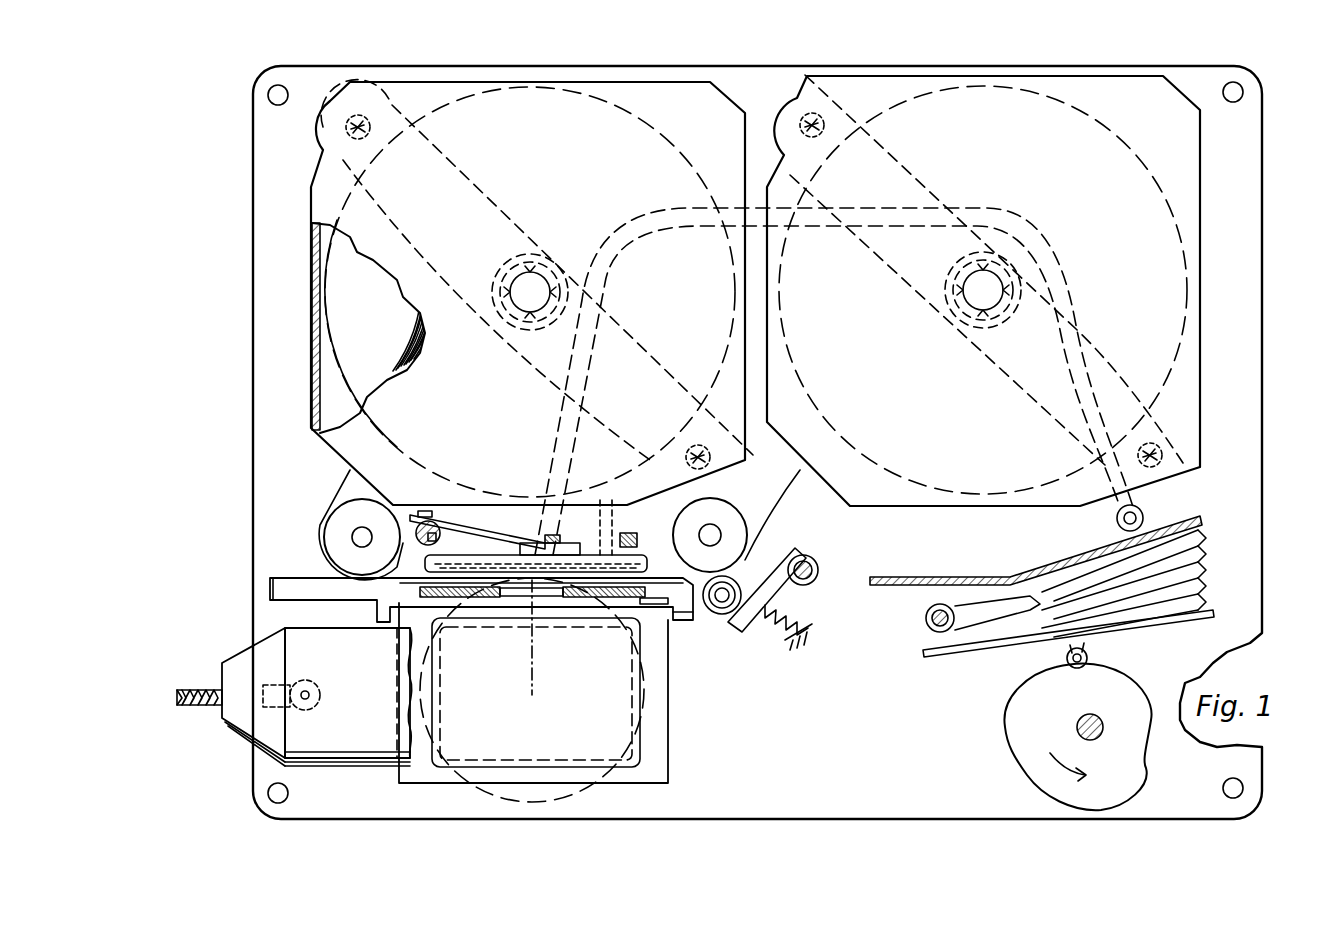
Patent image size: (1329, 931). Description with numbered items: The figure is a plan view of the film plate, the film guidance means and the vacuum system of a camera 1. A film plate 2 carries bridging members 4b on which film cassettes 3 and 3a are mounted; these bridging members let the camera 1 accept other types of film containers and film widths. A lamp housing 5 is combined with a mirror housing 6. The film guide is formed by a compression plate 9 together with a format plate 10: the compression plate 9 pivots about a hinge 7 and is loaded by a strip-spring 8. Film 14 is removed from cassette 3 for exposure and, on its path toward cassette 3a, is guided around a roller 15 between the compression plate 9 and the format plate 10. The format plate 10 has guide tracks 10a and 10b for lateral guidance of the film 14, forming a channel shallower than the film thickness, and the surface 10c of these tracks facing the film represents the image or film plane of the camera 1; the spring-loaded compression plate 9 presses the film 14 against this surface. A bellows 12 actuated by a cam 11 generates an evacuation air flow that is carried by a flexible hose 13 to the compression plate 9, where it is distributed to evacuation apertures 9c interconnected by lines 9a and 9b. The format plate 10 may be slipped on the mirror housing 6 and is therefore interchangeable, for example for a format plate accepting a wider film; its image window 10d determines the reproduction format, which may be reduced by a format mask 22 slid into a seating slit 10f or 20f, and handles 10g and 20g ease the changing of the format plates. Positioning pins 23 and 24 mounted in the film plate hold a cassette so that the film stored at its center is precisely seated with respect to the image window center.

The camera 1 is at (1272, 158).
The film plate 2 is at (1233, 325).
The film cassette 3 is at (330, 207).
The film cassette 3a is at (1185, 377).
The bridging member 4b is at (345, 157).
The lamp housing 5 is at (248, 722).
The mirror housing 6 is at (665, 748).
The hinge 7 is at (425, 522).
The strip-spring 8 is at (480, 538).
The compression plate 9 is at (549, 513).
The line 9a is at (447, 558).
The line 9b is at (580, 552).
The evacuation aperture 9c is at (612, 500).
The format plate 10 is at (686, 608).
The guide track 10a is at (791, 583).
The guide track 10b is at (760, 599).
The surface of guide tracks 10c is at (320, 580).
The image window 10d is at (522, 590).
The seating slit 10f is at (726, 650).
The seating slit 20f is at (660, 608).
The handle 10g is at (432, 584).
The handle 20g is at (312, 594).
The cam 11 is at (1040, 757).
The bellows 12 is at (1205, 580).
The flexible hose 13 is at (1047, 243).
The film 14 is at (340, 478).
The roller 15 is at (345, 525).
The format mask 22 is at (600, 600).
The positioning pin 23 is at (346, 122).
The positioning pin 24 is at (710, 460).